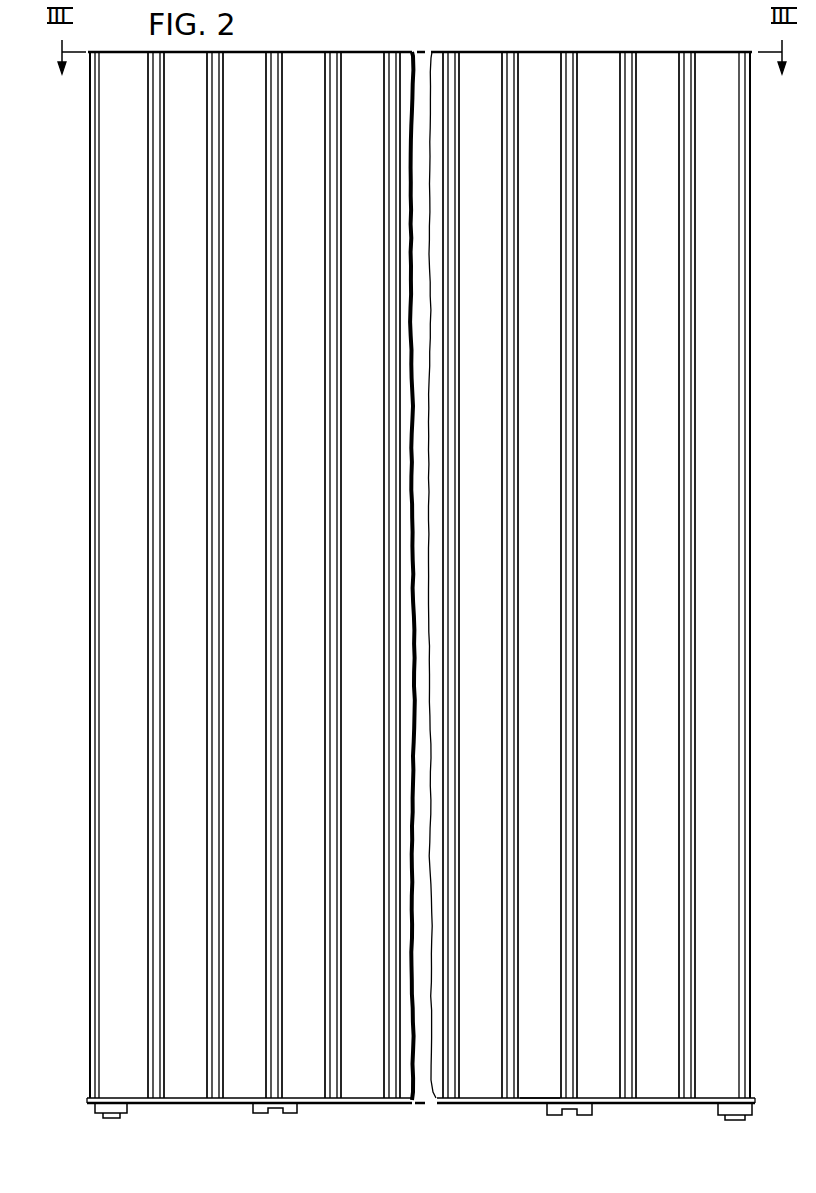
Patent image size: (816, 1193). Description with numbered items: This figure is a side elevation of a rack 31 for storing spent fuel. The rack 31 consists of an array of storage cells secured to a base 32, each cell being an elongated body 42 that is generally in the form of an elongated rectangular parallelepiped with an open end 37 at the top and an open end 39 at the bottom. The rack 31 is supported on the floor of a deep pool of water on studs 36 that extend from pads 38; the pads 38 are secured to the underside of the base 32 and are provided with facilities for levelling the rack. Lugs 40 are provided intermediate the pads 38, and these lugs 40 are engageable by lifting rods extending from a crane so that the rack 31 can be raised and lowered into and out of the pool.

The rack 31 is at (370, 28).
The base 32 is at (87, 1100).
The studs 36 is at (111, 1120).
The open end at the top 37 is at (602, 50).
The pads 38 is at (124, 1108).
The open end at the bottom 39 is at (367, 1088).
The lugs 40 is at (290, 1113).
The elongated body 42 is at (537, 63).